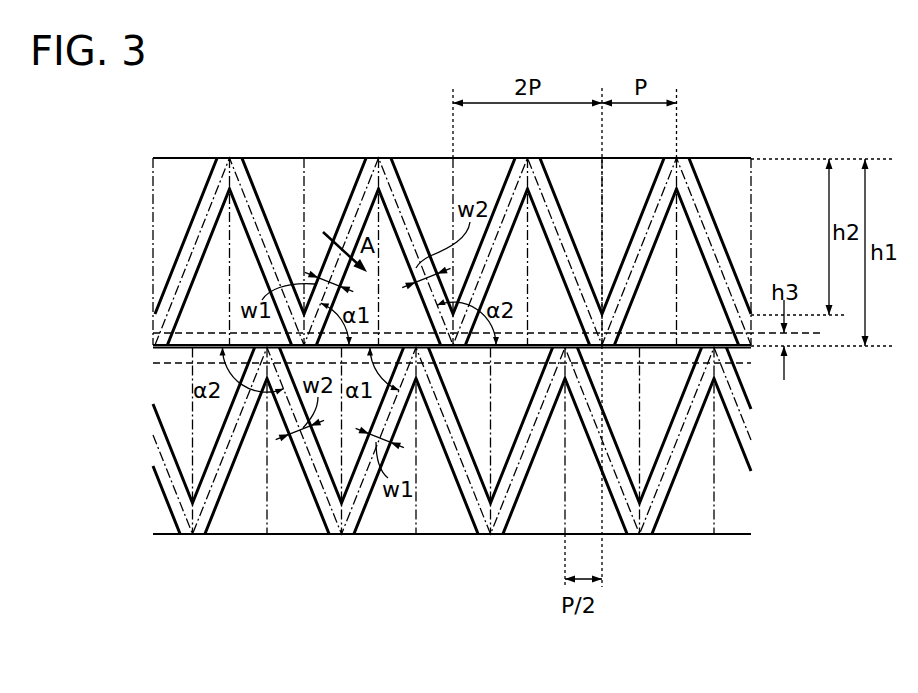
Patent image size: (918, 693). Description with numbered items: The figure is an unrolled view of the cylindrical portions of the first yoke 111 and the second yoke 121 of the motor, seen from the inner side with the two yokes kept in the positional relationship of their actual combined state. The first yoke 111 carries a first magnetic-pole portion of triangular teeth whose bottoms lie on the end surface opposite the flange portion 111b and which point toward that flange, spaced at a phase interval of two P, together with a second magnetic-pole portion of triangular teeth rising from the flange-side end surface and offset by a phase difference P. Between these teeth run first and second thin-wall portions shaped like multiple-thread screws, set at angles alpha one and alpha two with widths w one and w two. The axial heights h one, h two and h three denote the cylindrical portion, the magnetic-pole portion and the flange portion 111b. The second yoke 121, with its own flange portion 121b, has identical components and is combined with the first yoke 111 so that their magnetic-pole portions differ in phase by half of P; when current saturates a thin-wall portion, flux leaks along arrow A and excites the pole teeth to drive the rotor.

The first yoke 111 is at (160, 158).
The flange portion 111b is at (153, 333).
The second yoke 121 is at (163, 540).
The flange portion 121b is at (153, 363).